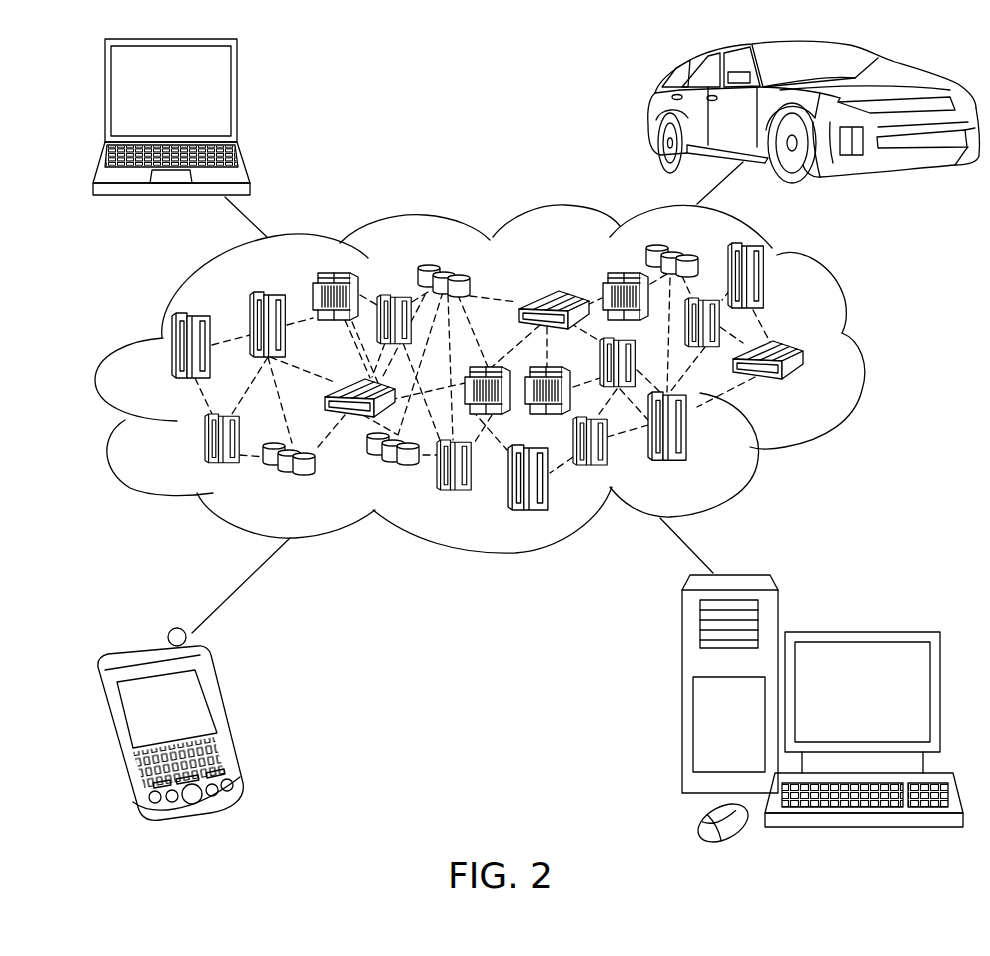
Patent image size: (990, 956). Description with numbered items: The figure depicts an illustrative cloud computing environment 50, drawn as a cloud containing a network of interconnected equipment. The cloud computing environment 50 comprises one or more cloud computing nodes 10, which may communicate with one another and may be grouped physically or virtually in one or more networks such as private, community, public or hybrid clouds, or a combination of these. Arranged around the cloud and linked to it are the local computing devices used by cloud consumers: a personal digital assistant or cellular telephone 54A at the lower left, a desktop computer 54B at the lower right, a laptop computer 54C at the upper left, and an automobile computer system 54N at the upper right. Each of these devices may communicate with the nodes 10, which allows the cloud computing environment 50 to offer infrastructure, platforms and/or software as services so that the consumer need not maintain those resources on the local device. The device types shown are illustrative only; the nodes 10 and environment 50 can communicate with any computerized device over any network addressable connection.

The cloud computing node 10 is at (808, 386).
The cloud computing environment 50 is at (506, 379).
The personal digital assistant or cellular telephone 54A is at (227, 718).
The desktop computer 54B is at (860, 632).
The laptop computer 54C is at (237, 95).
The automobile computer system 54N is at (652, 110).